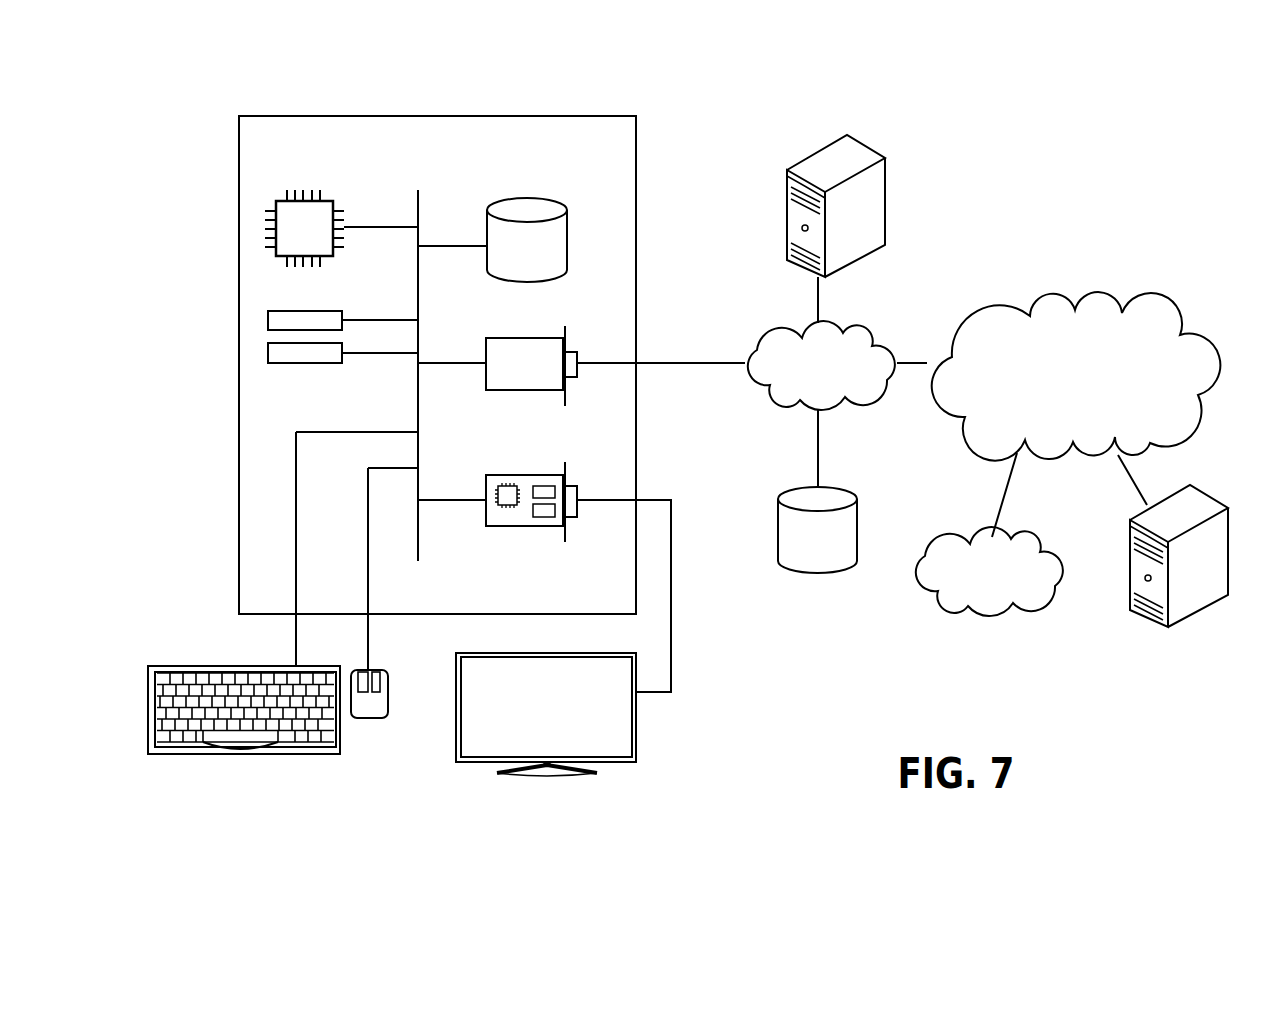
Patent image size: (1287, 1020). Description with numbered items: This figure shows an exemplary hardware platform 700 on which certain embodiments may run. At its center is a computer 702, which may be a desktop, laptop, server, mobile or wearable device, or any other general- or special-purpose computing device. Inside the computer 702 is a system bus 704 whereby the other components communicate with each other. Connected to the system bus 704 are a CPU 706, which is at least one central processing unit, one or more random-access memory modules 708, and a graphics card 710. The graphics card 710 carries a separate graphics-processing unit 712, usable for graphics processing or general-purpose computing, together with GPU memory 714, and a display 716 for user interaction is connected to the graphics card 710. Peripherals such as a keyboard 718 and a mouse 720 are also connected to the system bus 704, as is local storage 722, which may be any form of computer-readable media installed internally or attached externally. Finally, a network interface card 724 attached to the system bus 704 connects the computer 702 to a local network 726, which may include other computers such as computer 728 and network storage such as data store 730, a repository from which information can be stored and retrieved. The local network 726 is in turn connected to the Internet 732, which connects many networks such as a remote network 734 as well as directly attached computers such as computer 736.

The hardware platform 700 is at (1160, 120).
The computer 702 is at (593, 116).
The system bus 704 is at (420, 200).
The CPU 706 is at (333, 199).
The random-access memory modules 708 is at (342, 320).
The graphics card 710 is at (558, 562).
The graphics-processing unit 712 is at (505, 505).
The GPU memory 714 is at (545, 517).
The display 716 is at (636, 743).
The keyboard 718 is at (247, 755).
The mouse 720 is at (367, 718).
The local storage 722 is at (569, 228).
The network interface card 724 is at (487, 348).
The local network 726 is at (870, 322).
The computer 728 is at (873, 142).
The data store 730 is at (847, 490).
The Internet 732 is at (1117, 290).
The remote network 734 is at (1043, 530).
The computer 736 is at (1205, 490).